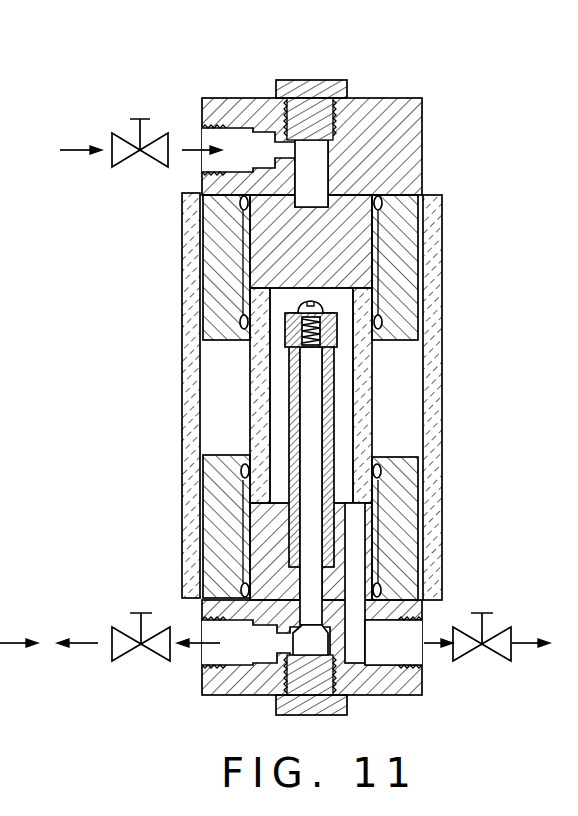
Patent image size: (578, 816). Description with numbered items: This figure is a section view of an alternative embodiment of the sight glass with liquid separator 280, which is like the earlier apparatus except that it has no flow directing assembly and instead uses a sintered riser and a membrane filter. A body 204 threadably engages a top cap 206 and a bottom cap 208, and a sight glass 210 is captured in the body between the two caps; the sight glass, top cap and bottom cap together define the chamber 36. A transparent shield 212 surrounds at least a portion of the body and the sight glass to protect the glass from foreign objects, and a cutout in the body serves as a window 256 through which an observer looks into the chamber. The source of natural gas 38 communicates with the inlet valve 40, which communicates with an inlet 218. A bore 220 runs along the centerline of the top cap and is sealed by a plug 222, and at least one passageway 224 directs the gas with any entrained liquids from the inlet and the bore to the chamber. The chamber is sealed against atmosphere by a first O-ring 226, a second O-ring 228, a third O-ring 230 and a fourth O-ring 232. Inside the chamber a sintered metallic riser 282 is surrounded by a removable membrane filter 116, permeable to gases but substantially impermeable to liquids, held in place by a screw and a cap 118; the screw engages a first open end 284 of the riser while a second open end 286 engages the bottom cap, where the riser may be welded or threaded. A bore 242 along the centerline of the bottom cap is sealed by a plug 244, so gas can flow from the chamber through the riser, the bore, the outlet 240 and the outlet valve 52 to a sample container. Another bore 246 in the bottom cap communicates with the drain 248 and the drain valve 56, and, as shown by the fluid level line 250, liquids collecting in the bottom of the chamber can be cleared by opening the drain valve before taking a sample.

The sight glass with liquid separator 280 is at (433, 83).
The top cap 206 is at (422, 162).
The bottom cap 208 is at (410, 697).
The plug 222 is at (302, 80).
The plug 244 is at (305, 715).
The inlet 218 is at (245, 137).
The bore 220 is at (323, 155).
The passageway 224 is at (293, 252).
The first O-ring 226 is at (245, 208).
The body 204 is at (400, 224).
The sight glass 210 is at (327, 290).
The second O-ring 228 is at (243, 315).
The window 256 is at (213, 415).
The fluid level line 250 is at (345, 460).
The chamber 36 is at (282, 368).
The first open end 284 is at (290, 333).
The cap 118 is at (335, 335).
The membrane filter 116 is at (333, 396).
The sintered metallic riser 282 is at (333, 415).
The second open end 286 is at (295, 540).
The fourth O-ring 232 is at (243, 470).
The shield 212 is at (433, 507).
The third O-ring 230 is at (242, 587).
The bore 246 is at (380, 590).
The bore 242 is at (355, 576).
The outlet 240 is at (237, 675).
The drain 248 is at (377, 650).
The inlet valve 40 is at (112, 133).
The source of natural gas 38 is at (56, 158).
The outlet valve 52 is at (113, 662).
The drain valve 56 is at (510, 661).